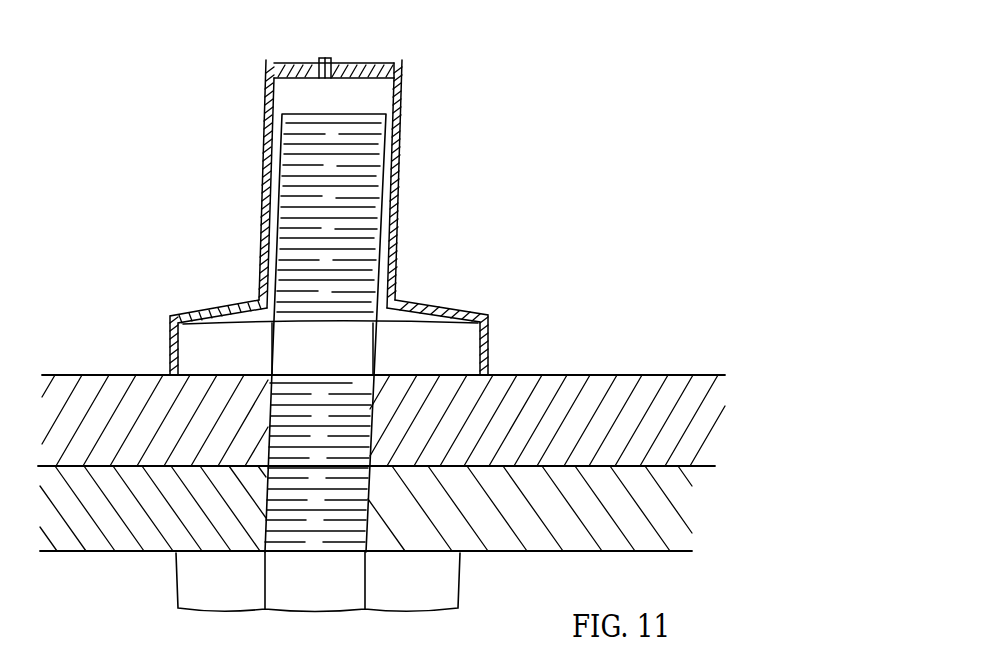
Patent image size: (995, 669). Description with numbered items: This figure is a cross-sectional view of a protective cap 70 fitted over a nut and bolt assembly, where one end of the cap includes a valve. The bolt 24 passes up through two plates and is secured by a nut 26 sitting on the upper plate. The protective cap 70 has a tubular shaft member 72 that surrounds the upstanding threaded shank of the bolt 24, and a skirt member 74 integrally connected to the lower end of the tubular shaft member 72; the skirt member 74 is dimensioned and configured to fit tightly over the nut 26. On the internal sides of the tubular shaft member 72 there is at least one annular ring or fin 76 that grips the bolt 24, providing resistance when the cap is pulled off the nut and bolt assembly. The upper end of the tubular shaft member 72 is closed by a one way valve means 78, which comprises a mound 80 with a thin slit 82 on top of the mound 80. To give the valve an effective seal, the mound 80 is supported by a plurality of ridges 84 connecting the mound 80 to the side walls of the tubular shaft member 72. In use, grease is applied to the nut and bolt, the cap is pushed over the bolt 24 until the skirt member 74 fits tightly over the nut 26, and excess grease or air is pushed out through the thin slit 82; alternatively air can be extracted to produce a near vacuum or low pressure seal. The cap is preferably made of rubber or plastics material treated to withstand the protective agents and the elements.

The bolt 24 is at (398, 208).
The nut 26 is at (210, 350).
The protective cap 70 is at (512, 254).
The tubular shaft member 72 is at (400, 144).
The skirt member 74 is at (485, 341).
The annular ring or fin 76 is at (263, 185).
The one way valve means 78 is at (331, 58).
The mound 80 is at (318, 60).
The thin slit 82 is at (323, 52).
The ridges 84 is at (368, 62).